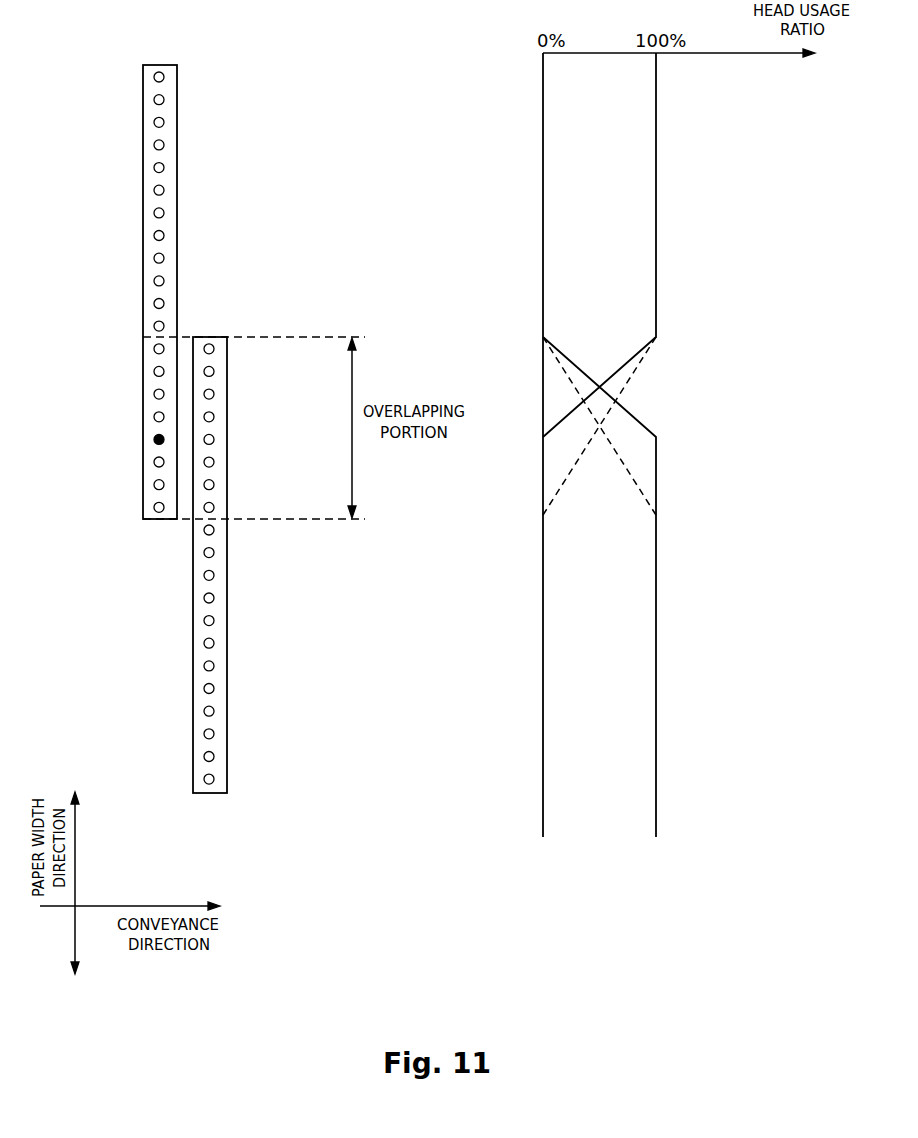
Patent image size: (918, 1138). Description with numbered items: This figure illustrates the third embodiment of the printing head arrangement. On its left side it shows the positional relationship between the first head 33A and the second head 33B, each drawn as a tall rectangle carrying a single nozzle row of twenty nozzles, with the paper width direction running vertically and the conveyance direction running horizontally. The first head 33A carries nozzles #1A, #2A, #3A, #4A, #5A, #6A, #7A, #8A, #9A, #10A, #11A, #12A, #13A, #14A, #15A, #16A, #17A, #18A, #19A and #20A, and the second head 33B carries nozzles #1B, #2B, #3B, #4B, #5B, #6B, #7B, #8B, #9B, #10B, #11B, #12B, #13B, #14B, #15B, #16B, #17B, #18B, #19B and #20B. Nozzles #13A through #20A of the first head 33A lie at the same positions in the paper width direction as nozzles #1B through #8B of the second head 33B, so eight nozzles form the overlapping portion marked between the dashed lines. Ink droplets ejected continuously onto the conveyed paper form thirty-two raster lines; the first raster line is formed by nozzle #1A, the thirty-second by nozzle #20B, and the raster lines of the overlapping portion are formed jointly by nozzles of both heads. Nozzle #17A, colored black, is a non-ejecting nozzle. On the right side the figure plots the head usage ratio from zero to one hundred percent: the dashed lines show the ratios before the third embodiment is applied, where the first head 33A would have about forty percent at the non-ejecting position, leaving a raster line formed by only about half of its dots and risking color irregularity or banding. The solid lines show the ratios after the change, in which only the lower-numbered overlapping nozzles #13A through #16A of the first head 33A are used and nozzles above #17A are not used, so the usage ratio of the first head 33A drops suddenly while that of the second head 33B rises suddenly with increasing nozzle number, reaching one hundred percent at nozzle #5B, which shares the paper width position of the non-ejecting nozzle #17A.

The first head 33A is at (160, 65).
The second head 33B is at (205, 795).
The nozzle # 1A is at (125, 77).
The nozzle # 2A is at (107, 99).
The nozzle # 3A is at (125, 122).
The nozzle # 4A is at (107, 144).
The nozzle # 5A is at (125, 167).
The nozzle # 6A is at (107, 190).
The nozzle # 7A is at (125, 212).
The nozzle # 8A is at (107, 235).
The nozzle # 9A is at (125, 258).
The nozzle # 10A is at (101, 280).
The nozzle # 11A is at (119, 303).
The nozzle # 12A is at (101, 326).
The nozzle # 13A is at (119, 348).
The nozzle # 14A is at (101, 371).
The nozzle # 15A is at (119, 394).
The nozzle # 16A is at (101, 416).
The nozzle # 17A is at (119, 439).
The nozzle # 18A is at (101, 462).
The nozzle # 19A is at (119, 484).
The nozzle # 20A is at (101, 507).
The nozzle # 1B is at (261, 348).
The nozzle # 2B is at (243, 371).
The nozzle # 3B is at (261, 394).
The nozzle # 4B is at (243, 416).
The nozzle # 5B is at (261, 439).
The nozzle # 6B is at (243, 462).
The nozzle # 7B is at (261, 484).
The nozzle # 8B is at (243, 507).
The nozzle # 9B is at (261, 530).
The nozzle # 10B is at (248, 552).
The nozzle # 11B is at (267, 575).
The nozzle # 12B is at (248, 598).
The nozzle # 13B is at (267, 620).
The nozzle # 14B is at (248, 643).
The nozzle # 15B is at (267, 665).
The nozzle # 16B is at (248, 688).
The nozzle # 17B is at (267, 711).
The nozzle # 18B is at (248, 733).
The nozzle # 19B is at (267, 756).
The nozzle # 20B is at (248, 779).